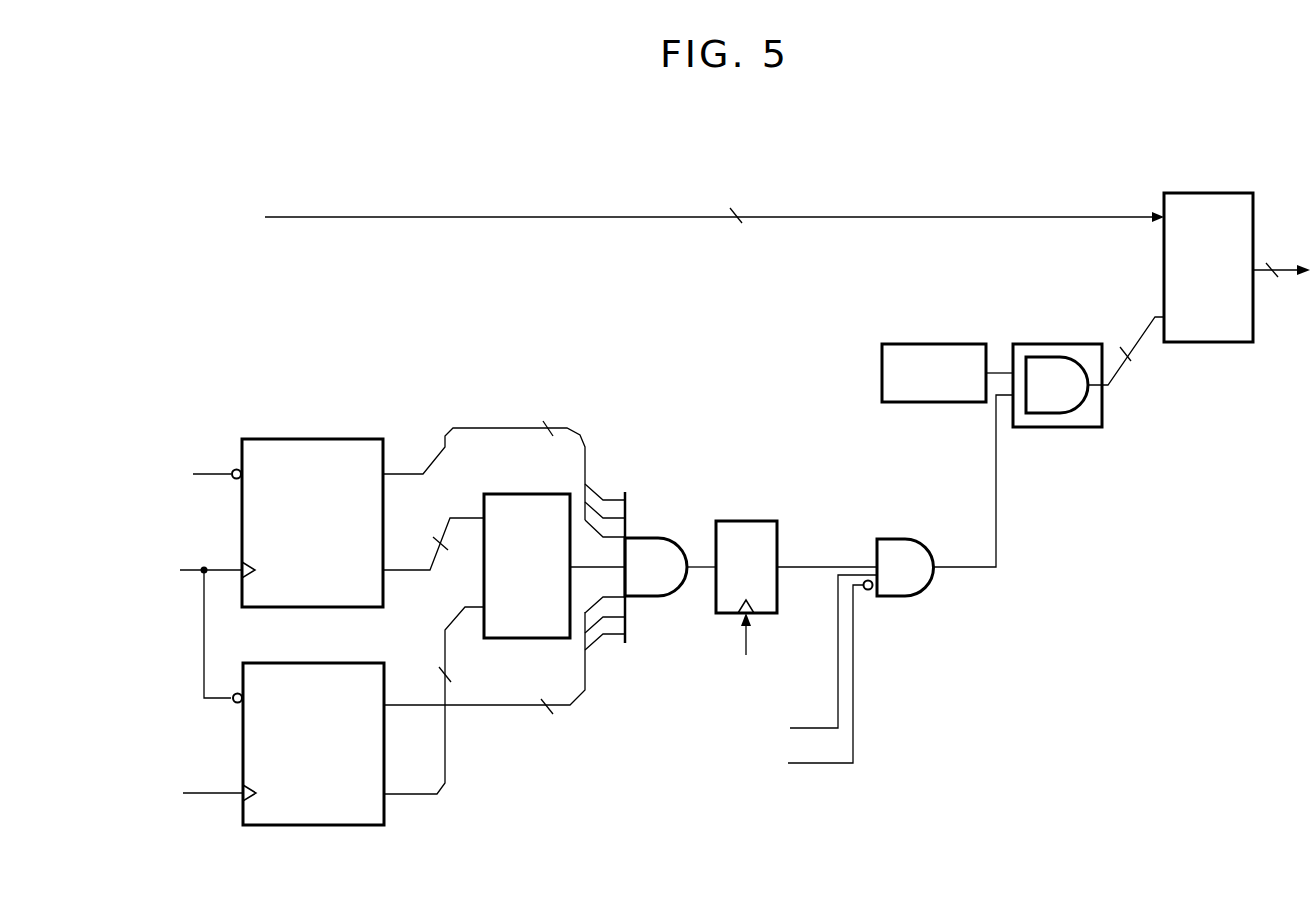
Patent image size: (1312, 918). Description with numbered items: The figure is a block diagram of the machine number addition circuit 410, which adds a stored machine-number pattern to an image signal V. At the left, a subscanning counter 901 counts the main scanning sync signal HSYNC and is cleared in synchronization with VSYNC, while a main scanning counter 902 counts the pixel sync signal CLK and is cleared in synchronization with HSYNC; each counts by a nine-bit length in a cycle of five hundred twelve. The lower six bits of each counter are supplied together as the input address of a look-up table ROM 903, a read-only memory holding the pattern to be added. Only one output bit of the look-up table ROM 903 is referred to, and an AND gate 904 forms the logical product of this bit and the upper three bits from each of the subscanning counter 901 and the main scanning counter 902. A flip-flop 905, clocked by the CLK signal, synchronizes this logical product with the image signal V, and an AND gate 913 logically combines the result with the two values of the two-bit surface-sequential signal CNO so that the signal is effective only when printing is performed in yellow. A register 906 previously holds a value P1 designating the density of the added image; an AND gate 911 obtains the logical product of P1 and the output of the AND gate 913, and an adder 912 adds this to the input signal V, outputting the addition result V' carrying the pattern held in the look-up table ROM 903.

The machine number addition circuit 410 is at (609, 161).
The subscanning counter 901 is at (354, 439).
The main scanning counter 902 is at (317, 826).
The look-up table ROM 903 is at (527, 494).
The AND gate 904 is at (650, 538).
The flip-flop 905 is at (760, 521).
The register 906 is at (954, 344).
The AND gate 911 is at (1071, 344).
The adder 912 is at (1221, 193).
The AND gate 913 is at (910, 539).